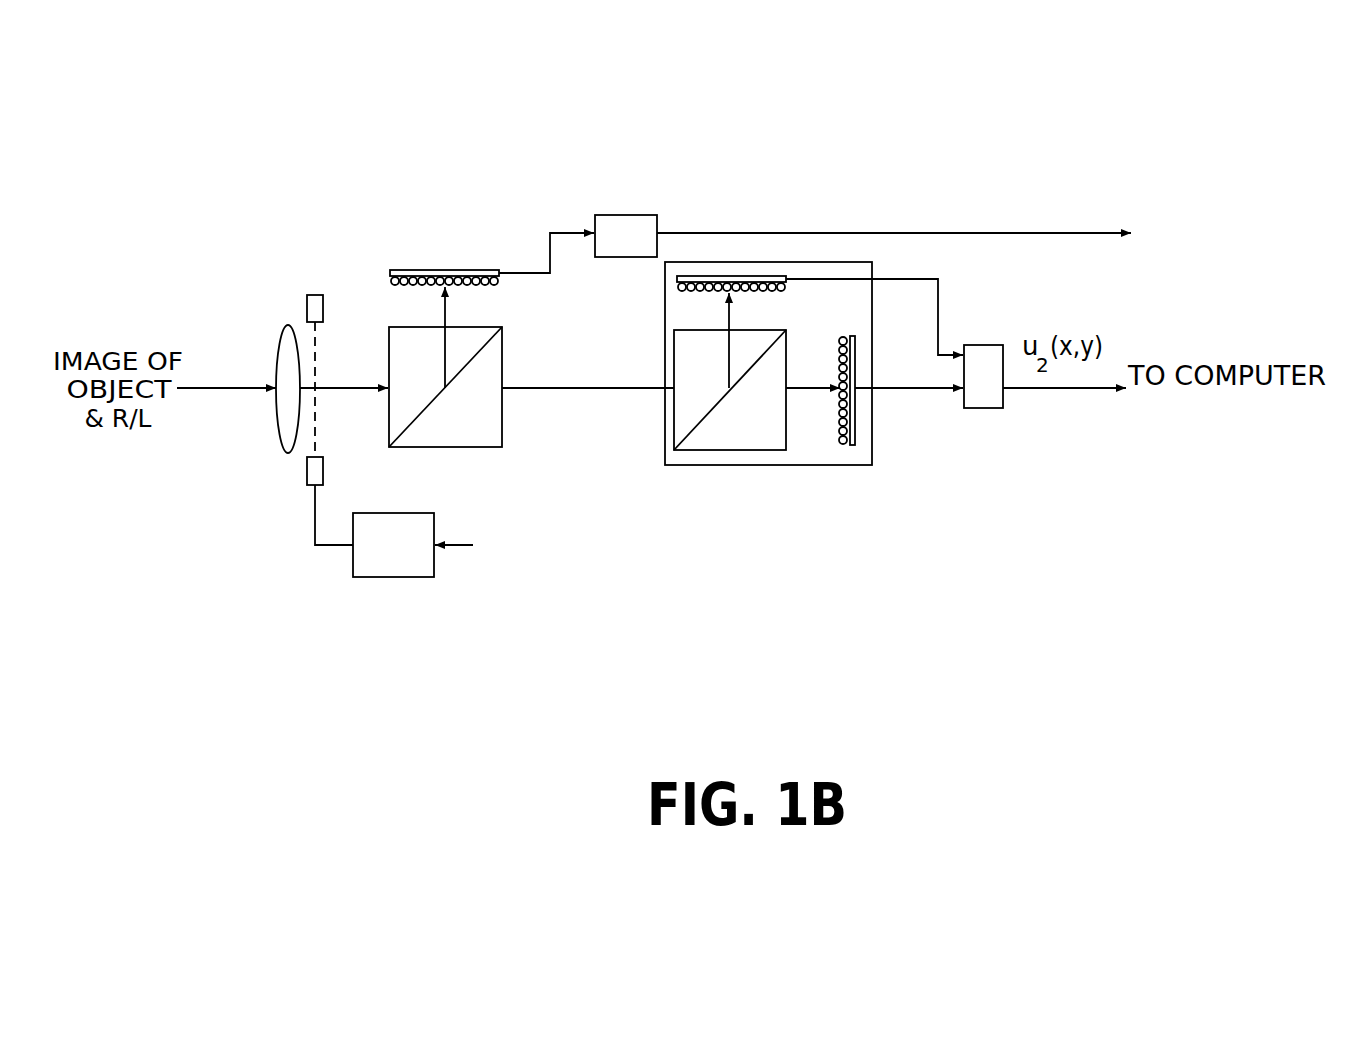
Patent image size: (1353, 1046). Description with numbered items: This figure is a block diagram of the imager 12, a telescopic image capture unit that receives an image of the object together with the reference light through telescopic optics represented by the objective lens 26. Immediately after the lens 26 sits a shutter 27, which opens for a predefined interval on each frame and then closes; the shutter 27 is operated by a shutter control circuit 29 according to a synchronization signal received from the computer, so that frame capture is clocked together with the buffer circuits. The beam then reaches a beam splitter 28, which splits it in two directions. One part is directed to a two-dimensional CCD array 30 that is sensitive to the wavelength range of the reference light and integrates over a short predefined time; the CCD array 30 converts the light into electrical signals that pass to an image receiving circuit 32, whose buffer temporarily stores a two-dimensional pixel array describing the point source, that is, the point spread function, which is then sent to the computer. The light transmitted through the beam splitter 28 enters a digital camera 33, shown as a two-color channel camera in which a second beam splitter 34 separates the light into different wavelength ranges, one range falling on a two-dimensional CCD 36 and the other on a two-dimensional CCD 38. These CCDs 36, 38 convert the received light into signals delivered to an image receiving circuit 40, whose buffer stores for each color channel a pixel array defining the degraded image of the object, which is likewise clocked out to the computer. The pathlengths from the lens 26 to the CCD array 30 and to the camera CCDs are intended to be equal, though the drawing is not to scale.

The imager 12 is at (660, 108).
The lens 26 is at (280, 340).
The shutter 27 is at (307, 295).
The beam splitter 28 is at (389, 328).
The shutter control circuit 29 is at (395, 577).
The two-dimensional CCD array 30 is at (413, 270).
The image receiving circuit 32 is at (620, 215).
The digital camera 33 is at (665, 326).
The beam splitter 34 is at (766, 330).
The two-dimensional CCD 36 is at (775, 276).
The two-dimensional CCD 38 is at (847, 336).
The image receiving circuit 40 is at (983, 345).